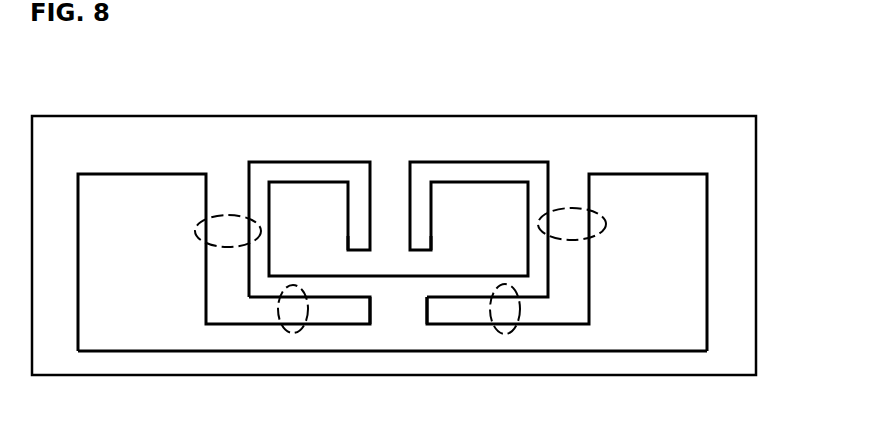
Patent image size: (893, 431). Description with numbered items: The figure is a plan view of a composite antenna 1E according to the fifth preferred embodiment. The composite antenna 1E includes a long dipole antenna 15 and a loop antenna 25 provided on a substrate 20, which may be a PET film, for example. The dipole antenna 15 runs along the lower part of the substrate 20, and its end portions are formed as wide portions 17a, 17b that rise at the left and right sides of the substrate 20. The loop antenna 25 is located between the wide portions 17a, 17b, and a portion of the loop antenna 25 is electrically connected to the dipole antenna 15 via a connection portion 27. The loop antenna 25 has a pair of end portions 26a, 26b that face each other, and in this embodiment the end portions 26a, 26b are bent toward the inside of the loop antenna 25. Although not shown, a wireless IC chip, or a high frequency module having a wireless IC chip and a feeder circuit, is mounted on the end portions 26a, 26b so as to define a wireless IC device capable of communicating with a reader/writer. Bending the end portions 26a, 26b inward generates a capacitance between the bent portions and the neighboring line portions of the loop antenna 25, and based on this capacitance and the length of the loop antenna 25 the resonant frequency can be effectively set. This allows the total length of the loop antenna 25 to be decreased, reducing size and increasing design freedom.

The composite antenna 1E is at (93, 79).
The substrate 20 is at (582, 116).
The wide portion 17a is at (130, 193).
The wide portion 17b is at (622, 190).
The dipole antenna 15 is at (547, 345).
The loop antenna 25 is at (493, 160).
The end portion 26a is at (361, 240).
The end portion 26b is at (418, 240).
The connection portion 27 is at (393, 312).